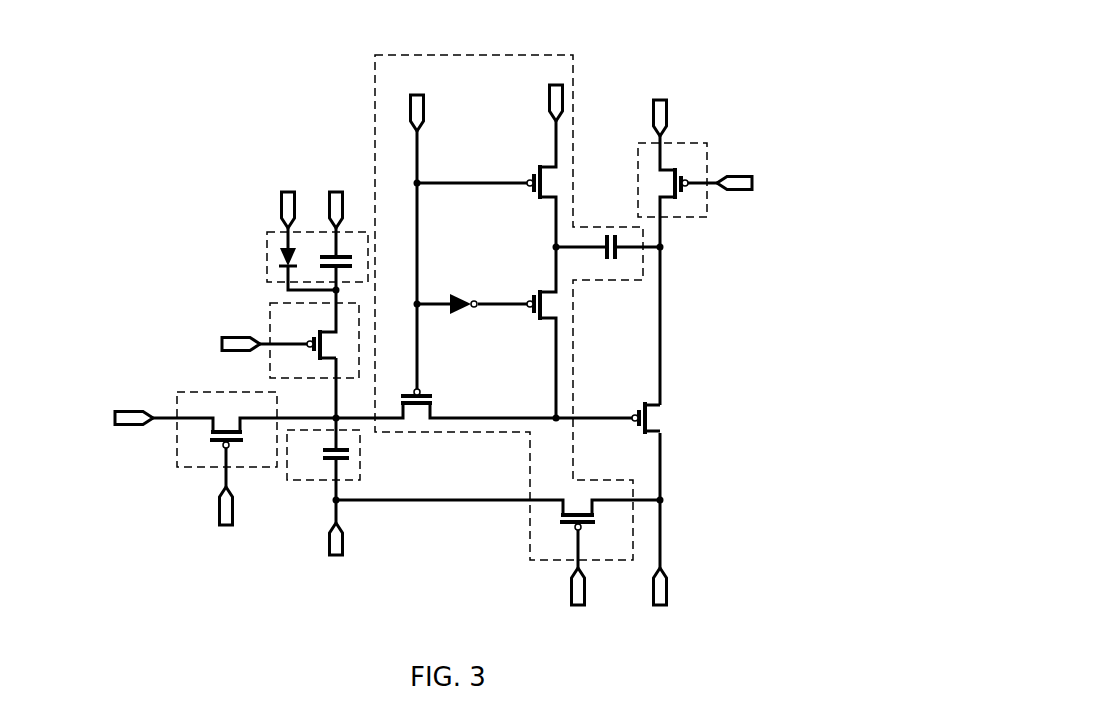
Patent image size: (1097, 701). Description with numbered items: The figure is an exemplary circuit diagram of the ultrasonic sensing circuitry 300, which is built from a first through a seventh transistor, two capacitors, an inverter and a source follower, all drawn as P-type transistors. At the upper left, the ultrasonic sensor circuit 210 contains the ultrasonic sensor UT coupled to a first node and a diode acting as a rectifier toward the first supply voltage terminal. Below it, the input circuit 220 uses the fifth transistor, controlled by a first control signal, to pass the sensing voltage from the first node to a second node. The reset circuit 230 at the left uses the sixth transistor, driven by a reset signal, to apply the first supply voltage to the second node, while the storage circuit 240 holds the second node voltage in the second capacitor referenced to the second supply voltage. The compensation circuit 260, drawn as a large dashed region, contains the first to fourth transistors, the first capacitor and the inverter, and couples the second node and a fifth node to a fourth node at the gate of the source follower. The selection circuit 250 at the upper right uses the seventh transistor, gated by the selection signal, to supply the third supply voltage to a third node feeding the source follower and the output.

The ultrasonic sensing circuitry 300 is at (740, 88).
The ultrasonic sensor circuit 210 is at (267, 247).
The input circuit 220 is at (270, 303).
The reset circuit 230 is at (177, 392).
The storage circuit 240 is at (363, 483).
The selection circuit 250 is at (707, 145).
The compensation circuit 260 is at (573, 130).